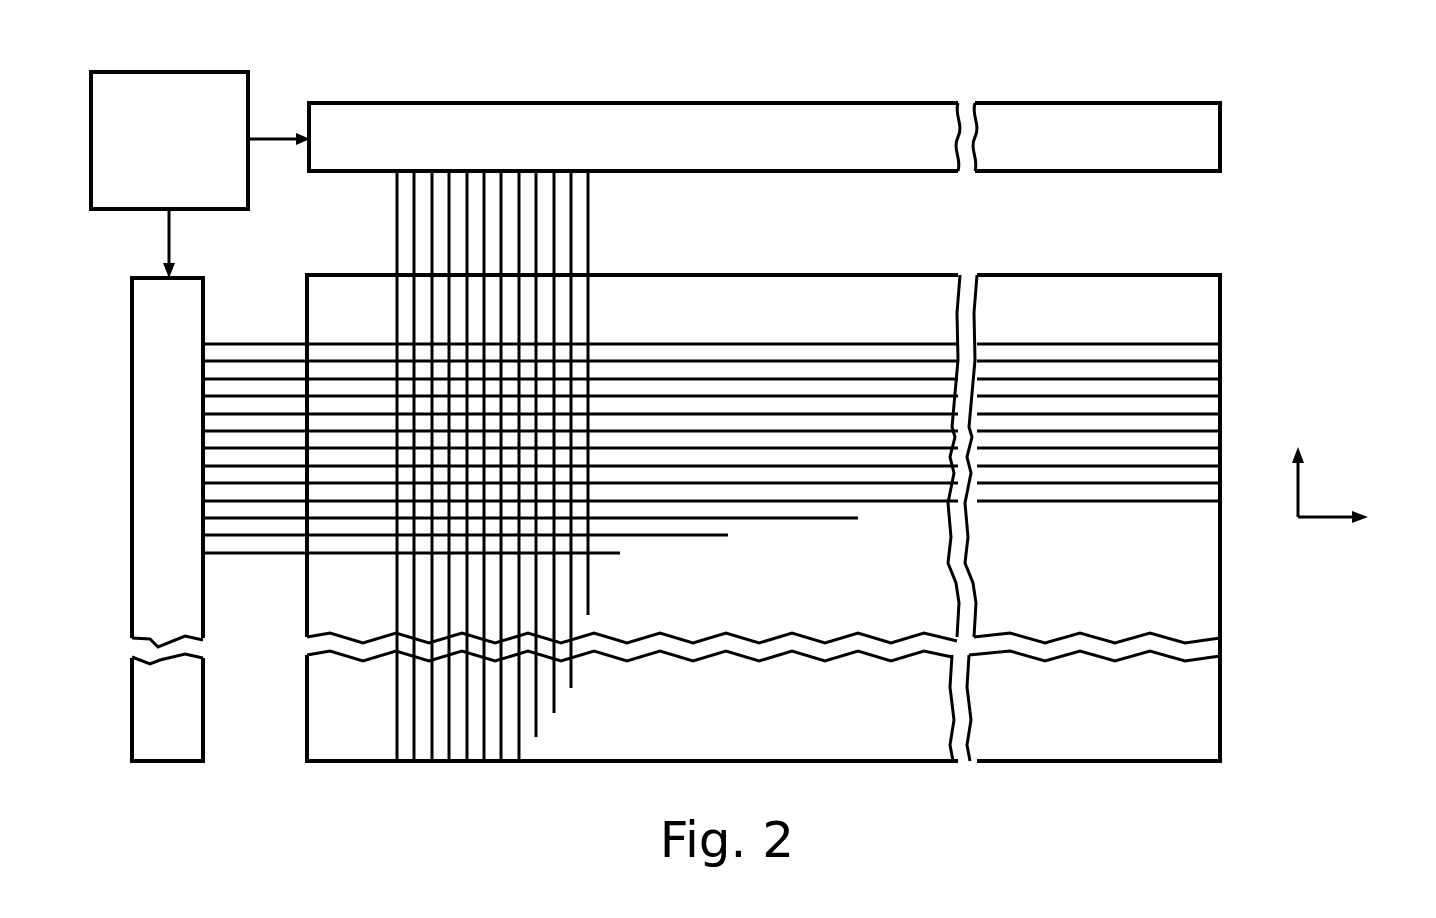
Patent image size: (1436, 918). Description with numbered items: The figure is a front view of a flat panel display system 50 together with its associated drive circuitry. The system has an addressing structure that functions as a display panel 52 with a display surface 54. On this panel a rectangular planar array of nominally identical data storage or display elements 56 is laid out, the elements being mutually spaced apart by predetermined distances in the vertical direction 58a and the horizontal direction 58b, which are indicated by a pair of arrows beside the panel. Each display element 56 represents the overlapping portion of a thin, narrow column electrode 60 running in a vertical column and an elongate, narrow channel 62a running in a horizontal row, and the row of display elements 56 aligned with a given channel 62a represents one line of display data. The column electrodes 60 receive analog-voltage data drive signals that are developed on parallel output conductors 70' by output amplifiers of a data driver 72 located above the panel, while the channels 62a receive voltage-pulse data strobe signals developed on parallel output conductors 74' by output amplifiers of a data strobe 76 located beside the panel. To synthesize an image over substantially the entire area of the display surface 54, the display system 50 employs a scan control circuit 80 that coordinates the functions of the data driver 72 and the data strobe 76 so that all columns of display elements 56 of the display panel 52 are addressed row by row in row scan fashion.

The flat panel display system 50 is at (604, 788).
The display panel 52 is at (912, 768).
The display surface 54 is at (832, 738).
The display elements 56 is at (397, 380).
The vertical direction 58a is at (1298, 478).
The horizontal direction 58b is at (1322, 520).
The column electrodes 60 is at (588, 572).
The channels 62a is at (787, 379).
The output conductors 70' is at (444, 466).
The data driver 72 is at (1018, 103).
The output conductors 74' is at (580, 425).
The data strobe 76 is at (132, 368).
The scan control circuit 80 is at (90, 130).